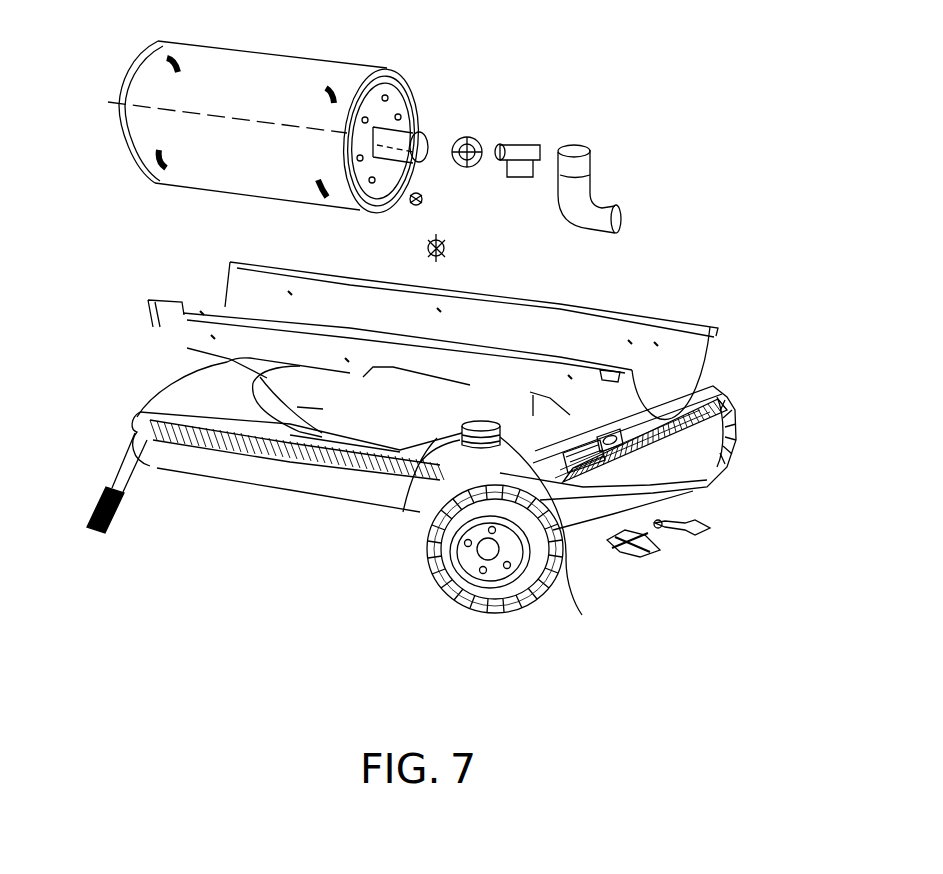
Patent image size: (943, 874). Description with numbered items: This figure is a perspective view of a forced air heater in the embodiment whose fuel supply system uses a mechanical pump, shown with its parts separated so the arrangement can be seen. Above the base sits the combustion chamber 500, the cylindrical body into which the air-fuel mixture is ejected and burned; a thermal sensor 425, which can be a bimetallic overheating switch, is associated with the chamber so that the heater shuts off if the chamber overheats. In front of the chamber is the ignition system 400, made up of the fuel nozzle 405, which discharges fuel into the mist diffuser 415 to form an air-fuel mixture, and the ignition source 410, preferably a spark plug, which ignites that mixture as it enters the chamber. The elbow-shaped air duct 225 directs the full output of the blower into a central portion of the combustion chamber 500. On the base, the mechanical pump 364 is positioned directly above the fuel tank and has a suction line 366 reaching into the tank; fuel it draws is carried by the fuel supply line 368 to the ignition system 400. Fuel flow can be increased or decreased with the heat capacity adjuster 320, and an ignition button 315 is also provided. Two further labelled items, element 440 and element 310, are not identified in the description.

The combustion chamber 500 is at (282, 67).
The thermal sensor 425 is at (411, 207).
The fastener 440 is at (497, 287).
The ignition system 400 is at (538, 106).
The mist diffuser 415 is at (480, 141).
The ignition source 410 is at (530, 141).
The fuel nozzle 405 is at (522, 180).
The air duct 225 is at (227, 363).
The fuel supply line 368 is at (478, 420).
The base 310 is at (700, 493).
The mechanical pump 364 is at (460, 440).
The suction line 366 is at (582, 615).
The heat capacity adjuster 320 is at (660, 550).
The ignition button 315 is at (713, 528).